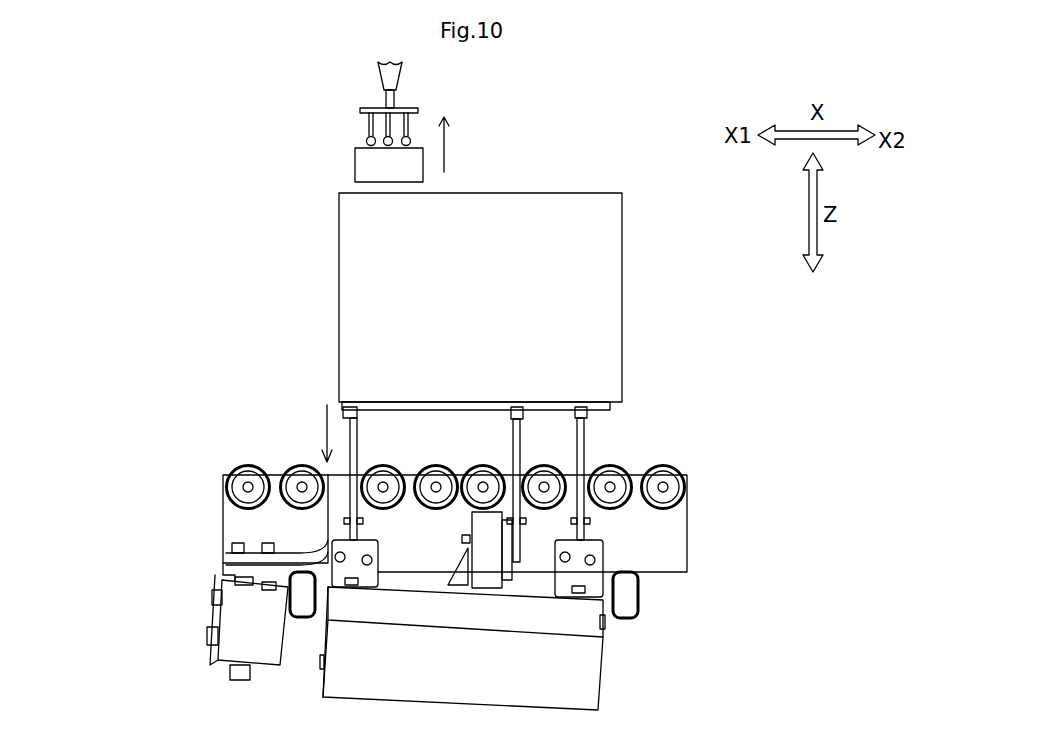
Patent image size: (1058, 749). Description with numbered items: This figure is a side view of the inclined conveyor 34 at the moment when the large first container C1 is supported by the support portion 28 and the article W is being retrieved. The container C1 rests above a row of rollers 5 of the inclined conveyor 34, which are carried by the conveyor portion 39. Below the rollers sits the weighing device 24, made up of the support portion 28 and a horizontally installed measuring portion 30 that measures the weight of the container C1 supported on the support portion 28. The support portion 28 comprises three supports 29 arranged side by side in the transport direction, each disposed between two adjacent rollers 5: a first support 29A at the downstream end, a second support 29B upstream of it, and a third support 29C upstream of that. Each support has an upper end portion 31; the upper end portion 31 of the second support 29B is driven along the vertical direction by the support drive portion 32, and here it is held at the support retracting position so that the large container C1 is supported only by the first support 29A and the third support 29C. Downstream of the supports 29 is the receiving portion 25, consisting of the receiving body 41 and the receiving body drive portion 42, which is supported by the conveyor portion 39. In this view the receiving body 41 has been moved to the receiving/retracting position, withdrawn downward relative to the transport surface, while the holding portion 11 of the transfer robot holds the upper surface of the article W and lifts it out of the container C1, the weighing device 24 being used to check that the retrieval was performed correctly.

The holding portion 11 is at (340, 93).
The article W is at (362, 166).
The first container C1 is at (355, 290).
The supports 29 is at (504, 440).
The first support 29A is at (358, 448).
The second support 29B is at (512, 448).
The third support 29C is at (583, 446).
The upper end portion 31 is at (352, 408).
The rollers 5 is at (297, 465).
The inclined conveyor 34 is at (499, 457).
The conveyor portion 39 is at (680, 540).
The receiving body 41 is at (328, 525).
The receiving portion 25 is at (184, 610).
The receiving body drive portion 42 is at (237, 622).
The support portion 28 is at (590, 620).
The support drive portion 32 is at (492, 590).
The measuring portion 30 is at (333, 673).
The weighing device 24 is at (515, 657).